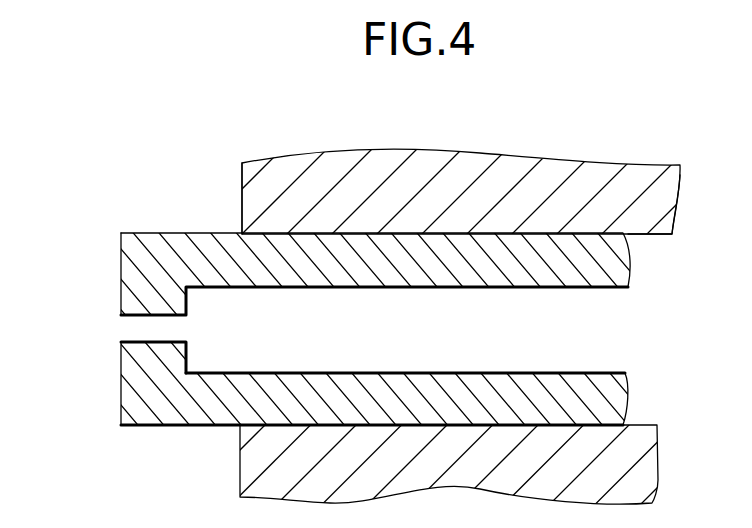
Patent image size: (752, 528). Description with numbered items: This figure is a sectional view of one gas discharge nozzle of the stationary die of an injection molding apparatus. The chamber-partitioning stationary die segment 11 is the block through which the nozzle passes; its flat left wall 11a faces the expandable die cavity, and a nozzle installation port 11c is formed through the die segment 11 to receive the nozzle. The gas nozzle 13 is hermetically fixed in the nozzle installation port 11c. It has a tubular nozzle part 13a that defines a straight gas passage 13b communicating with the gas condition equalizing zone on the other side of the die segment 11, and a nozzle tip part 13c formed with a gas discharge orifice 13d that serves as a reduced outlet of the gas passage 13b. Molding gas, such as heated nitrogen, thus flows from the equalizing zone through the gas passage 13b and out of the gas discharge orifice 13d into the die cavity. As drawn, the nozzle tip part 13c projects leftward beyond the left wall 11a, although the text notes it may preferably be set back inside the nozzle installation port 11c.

The chamber-partitioning stationary die segment 11 is at (232, 169).
The flat left wall of the die segment 11a is at (242, 210).
The nozzle installation port 11c is at (652, 247).
The gas nozzle 13 is at (108, 264).
The tubular nozzle part 13a is at (632, 396).
The straight gas passage 13b is at (588, 373).
The nozzle tip part 13c is at (179, 425).
The gas discharge orifice 13d is at (130, 331).